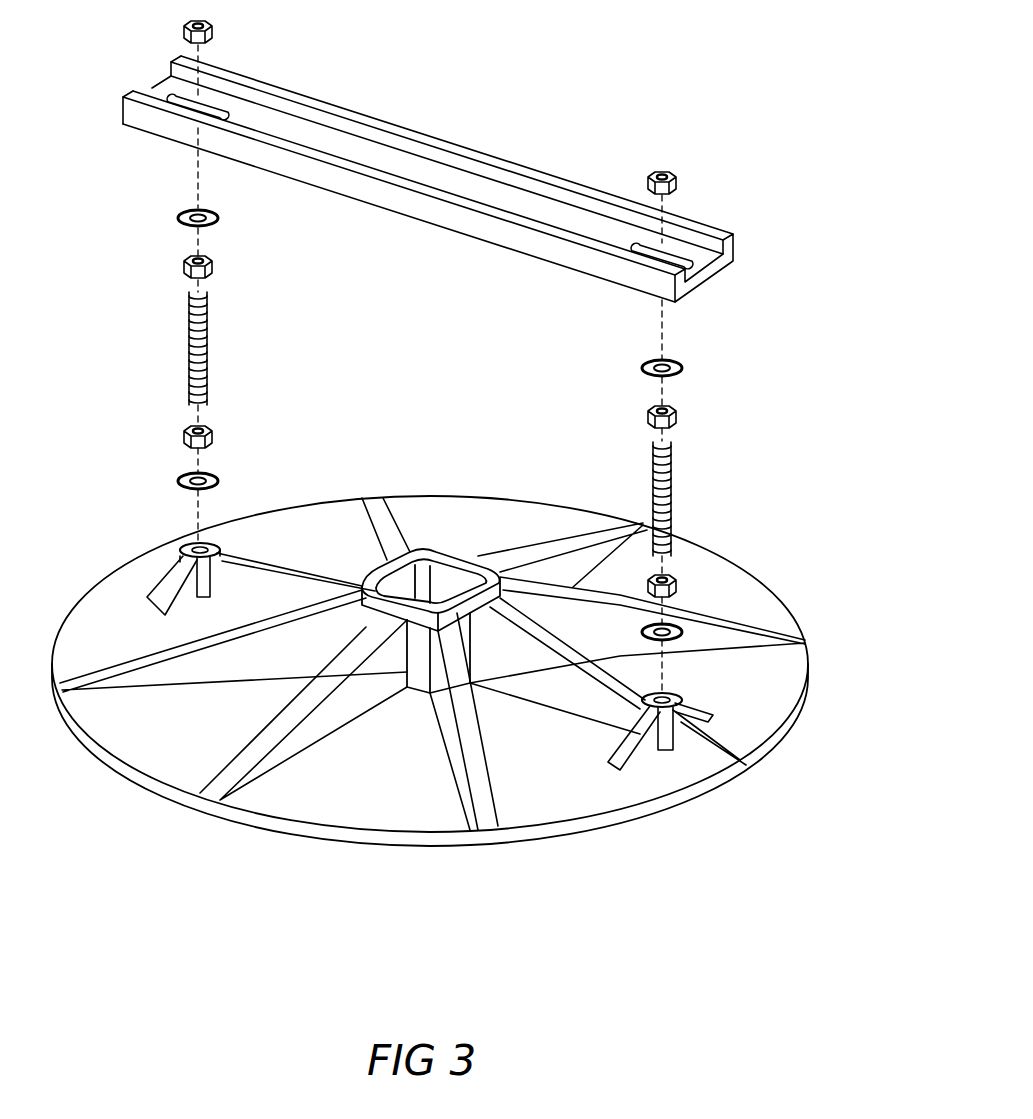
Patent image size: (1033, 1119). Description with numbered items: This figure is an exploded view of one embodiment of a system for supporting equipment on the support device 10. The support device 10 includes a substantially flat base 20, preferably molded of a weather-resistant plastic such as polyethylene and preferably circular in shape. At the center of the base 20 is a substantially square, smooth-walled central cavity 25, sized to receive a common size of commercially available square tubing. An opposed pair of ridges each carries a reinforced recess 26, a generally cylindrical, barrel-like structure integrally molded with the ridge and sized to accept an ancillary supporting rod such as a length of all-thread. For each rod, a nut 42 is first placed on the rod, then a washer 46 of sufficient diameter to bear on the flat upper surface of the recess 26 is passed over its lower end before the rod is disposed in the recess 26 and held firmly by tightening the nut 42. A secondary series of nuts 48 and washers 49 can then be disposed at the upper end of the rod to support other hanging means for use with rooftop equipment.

The support device 10 is at (178, 818).
The base 20 is at (565, 800).
The central cavity 25 is at (440, 578).
The reinforced recess 26 is at (186, 547).
The nut 42 is at (683, 583).
The washer 46 is at (182, 480).
The nuts 48 is at (215, 268).
The washers 49 is at (182, 216).